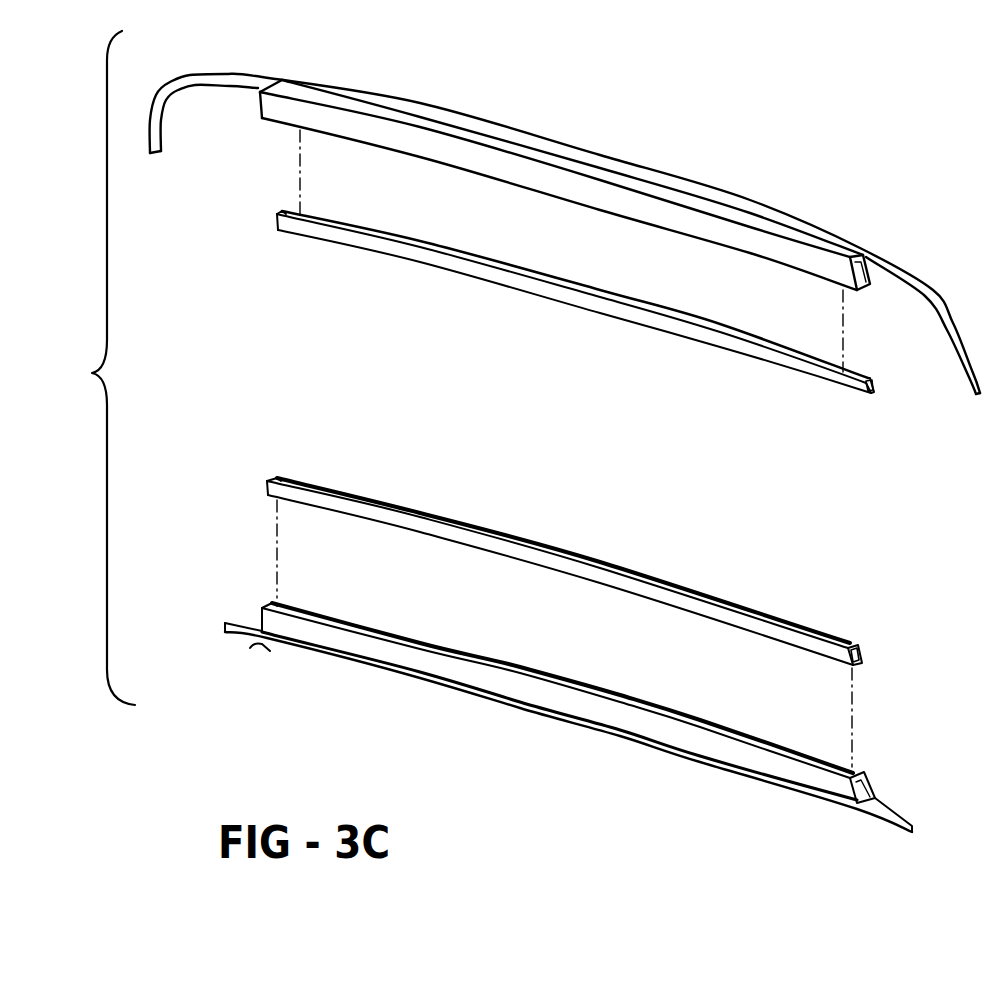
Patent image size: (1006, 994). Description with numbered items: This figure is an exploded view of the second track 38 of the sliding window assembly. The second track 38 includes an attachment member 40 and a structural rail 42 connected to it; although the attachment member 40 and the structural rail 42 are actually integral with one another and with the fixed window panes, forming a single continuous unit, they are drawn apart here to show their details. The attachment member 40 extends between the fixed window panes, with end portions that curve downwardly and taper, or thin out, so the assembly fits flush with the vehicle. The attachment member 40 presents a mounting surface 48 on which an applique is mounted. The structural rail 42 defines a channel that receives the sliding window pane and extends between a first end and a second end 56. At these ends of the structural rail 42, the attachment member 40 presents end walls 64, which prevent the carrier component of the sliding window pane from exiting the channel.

The second track 38 is at (697, 740).
The attachment member 40 is at (947, 296).
The structural rail 42 is at (611, 307).
The mounting surface 48 is at (473, 655).
The second end 56 is at (876, 387).
The end wall 64 is at (866, 276).